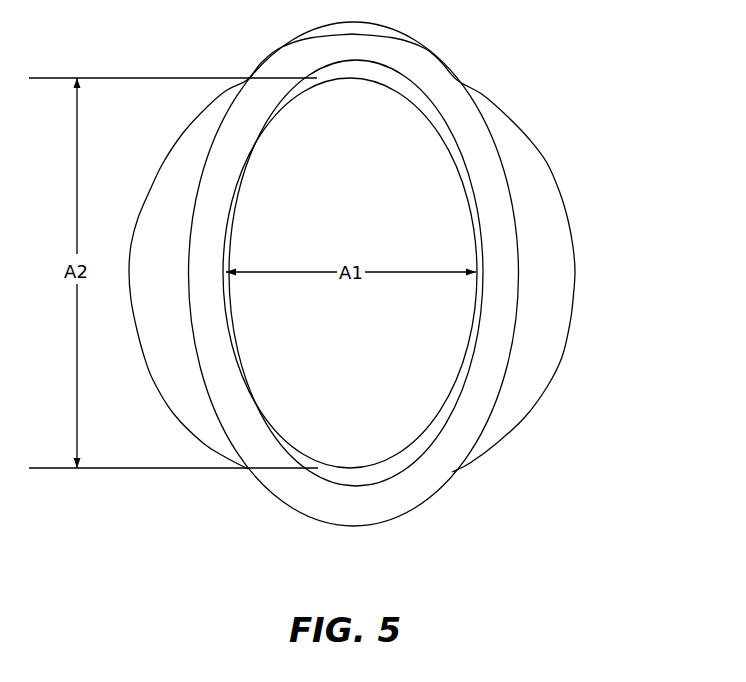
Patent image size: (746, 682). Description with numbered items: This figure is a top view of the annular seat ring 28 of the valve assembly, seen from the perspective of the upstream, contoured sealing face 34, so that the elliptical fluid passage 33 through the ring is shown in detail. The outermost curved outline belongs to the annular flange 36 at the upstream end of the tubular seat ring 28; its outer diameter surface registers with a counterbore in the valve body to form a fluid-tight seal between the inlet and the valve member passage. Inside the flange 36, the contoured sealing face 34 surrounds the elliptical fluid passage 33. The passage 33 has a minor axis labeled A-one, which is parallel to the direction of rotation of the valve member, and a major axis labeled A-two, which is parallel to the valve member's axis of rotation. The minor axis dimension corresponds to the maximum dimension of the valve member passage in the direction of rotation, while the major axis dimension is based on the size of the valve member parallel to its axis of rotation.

The annular seat ring 28 is at (608, 120).
The elliptical fluid passage 33 is at (339, 236).
The contoured sealing face 34 is at (430, 57).
The annular flange 36 is at (551, 388).